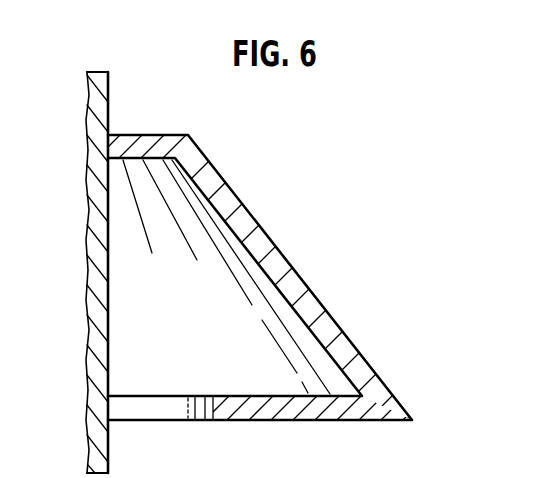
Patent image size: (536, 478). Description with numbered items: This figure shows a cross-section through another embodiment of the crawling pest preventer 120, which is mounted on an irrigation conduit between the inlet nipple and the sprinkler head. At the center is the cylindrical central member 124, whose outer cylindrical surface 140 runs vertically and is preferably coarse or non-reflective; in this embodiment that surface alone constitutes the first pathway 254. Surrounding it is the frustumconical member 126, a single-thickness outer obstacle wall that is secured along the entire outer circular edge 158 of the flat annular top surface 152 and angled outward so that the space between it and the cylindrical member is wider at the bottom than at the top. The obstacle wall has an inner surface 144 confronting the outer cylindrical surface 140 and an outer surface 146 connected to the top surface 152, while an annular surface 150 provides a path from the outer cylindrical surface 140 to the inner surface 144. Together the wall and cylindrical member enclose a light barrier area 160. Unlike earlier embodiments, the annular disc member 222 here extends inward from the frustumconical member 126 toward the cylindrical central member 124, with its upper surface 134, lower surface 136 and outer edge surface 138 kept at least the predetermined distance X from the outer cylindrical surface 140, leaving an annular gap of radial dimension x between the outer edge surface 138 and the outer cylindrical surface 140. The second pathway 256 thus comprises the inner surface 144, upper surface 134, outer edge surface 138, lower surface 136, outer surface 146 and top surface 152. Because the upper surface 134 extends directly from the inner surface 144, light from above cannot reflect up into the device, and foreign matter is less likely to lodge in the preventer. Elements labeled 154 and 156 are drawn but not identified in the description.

The crawling pest preventer 120 is at (273, 222).
The cylindrical central member 124 is at (96, 233).
The frustumconical member 126 is at (270, 232).
The upper surface 134 is at (257, 396).
The lower surface 136 is at (376, 421).
The outer edge surface 138 is at (205, 421).
The outer cylindrical surface 140 is at (93, 309).
The inner surface 144 is at (320, 335).
The outer surface 146 is at (294, 262).
The annular surface 150 is at (108, 160).
The top surface 152 is at (138, 133).
The wall surface 154 is at (98, 205).
The frame outer surface 156 is at (318, 297).
The outer circular edge 158 is at (188, 135).
The light barrier area 160 is at (166, 229).
The annular disc member 222 is at (318, 420).
The first pathway 254 is at (97, 271).
The second pathway 256 is at (232, 186).